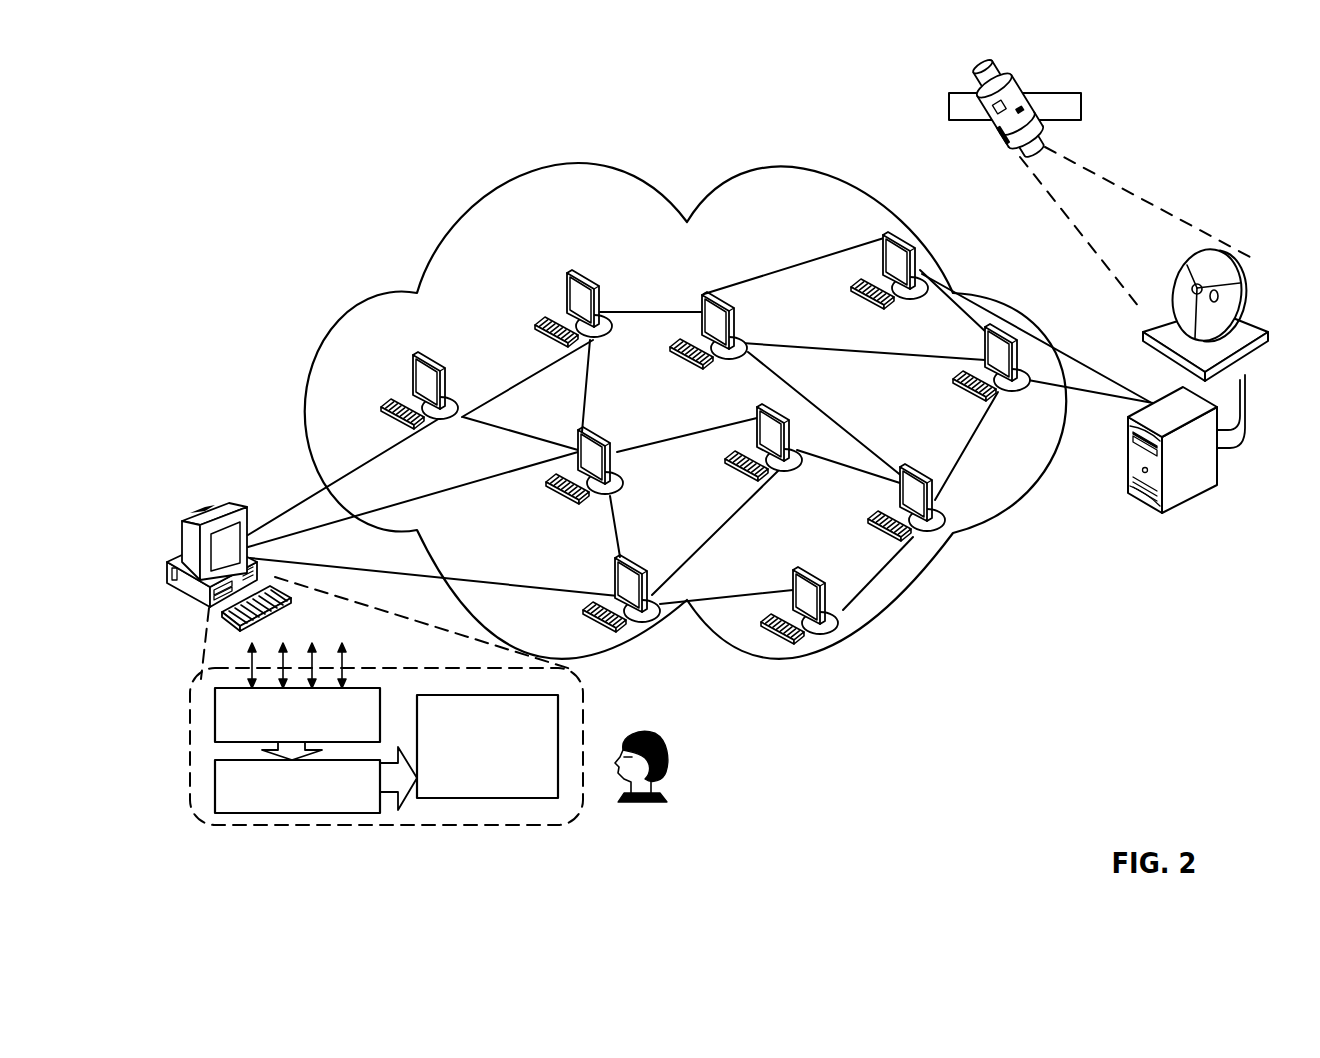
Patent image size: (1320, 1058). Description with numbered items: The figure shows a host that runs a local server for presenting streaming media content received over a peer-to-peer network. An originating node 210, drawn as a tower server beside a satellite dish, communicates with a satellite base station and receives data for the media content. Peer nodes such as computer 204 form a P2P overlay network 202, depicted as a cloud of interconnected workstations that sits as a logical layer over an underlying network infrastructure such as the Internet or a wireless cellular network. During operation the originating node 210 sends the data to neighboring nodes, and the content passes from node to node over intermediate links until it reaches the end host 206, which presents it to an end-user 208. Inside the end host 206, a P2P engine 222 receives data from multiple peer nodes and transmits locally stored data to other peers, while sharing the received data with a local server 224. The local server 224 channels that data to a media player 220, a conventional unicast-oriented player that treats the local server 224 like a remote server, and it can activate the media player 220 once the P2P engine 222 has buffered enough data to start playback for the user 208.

The P2P overlay network 202 is at (686, 411).
The computer 204 is at (837, 633).
The end host 206 is at (215, 508).
The end-user 208 is at (653, 802).
The originating node 210 is at (1183, 502).
The media player 220 is at (487, 746).
The P2P engine 222 is at (297, 715).
The local server 224 is at (297, 786).